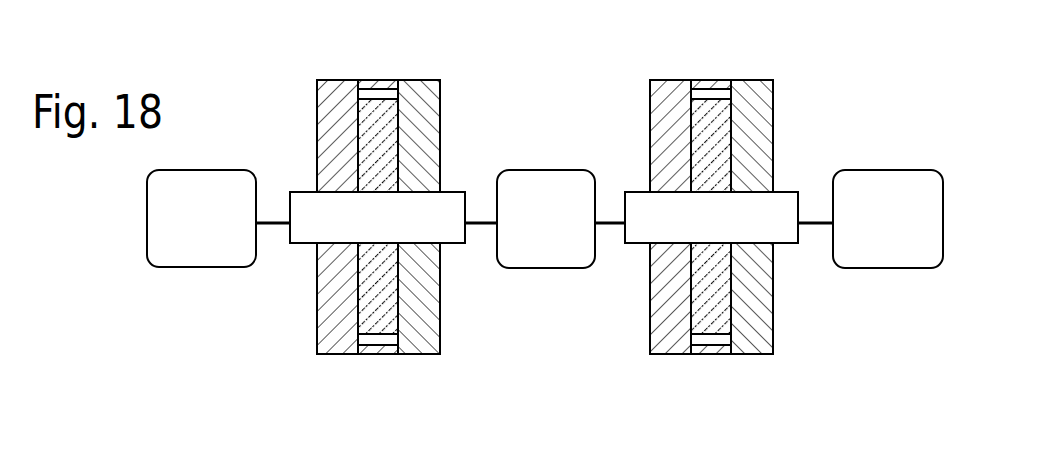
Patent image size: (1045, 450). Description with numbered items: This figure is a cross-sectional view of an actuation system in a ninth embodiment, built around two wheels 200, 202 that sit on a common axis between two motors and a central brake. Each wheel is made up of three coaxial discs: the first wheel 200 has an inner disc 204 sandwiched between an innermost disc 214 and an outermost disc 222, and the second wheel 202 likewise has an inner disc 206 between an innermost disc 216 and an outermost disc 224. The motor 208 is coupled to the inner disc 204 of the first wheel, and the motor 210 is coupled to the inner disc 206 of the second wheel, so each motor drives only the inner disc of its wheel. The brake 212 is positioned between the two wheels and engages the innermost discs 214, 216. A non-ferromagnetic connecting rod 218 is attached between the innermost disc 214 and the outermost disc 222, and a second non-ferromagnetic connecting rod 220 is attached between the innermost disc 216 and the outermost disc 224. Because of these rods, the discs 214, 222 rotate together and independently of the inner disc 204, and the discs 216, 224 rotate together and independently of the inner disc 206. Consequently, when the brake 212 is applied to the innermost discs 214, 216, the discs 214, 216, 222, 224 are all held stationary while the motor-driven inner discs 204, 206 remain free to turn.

The wheel 200 is at (405, 220).
The wheel 202 is at (689, 221).
The inner disc 204 is at (393, 148).
The inner disc 206 is at (690, 128).
The motor 208 is at (183, 268).
The motor 210 is at (870, 269).
The brake 212 is at (548, 269).
The innermost disc 214 is at (422, 355).
The innermost disc 216 is at (675, 355).
The non-ferromagnetic connecting rod 218 is at (378, 355).
The non-ferromagnetic connecting rod 220 is at (715, 355).
The outermost disc 222 is at (335, 355).
The outermost disc 224 is at (759, 355).